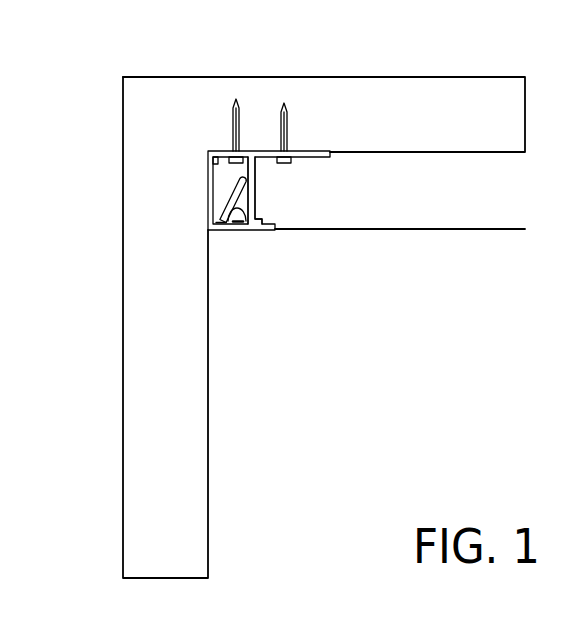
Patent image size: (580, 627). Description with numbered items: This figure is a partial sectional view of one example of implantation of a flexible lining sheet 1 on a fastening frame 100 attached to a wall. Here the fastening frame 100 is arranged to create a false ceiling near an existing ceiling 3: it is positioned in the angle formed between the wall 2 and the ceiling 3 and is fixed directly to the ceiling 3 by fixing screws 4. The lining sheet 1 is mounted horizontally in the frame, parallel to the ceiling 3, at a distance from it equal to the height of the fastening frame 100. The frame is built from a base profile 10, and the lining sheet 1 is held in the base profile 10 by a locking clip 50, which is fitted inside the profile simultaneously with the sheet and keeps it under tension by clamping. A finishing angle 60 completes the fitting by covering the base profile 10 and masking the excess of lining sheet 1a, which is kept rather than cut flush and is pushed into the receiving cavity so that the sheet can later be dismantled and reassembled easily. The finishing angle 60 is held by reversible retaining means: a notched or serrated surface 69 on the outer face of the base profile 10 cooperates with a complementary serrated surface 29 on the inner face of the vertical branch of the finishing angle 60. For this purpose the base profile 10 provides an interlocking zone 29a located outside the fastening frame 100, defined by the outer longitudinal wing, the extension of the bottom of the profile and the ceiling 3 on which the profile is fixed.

The lining sheet 1 is at (412, 230).
The excess of lining sheet 1a is at (242, 222).
The wall 2 is at (155, 459).
The ceiling 3 is at (476, 125).
The fixing screws 4 is at (238, 107).
The base profile 10 is at (218, 151).
The notched or serrated surface 29 is at (135, 206).
The interlocking zone 29a is at (212, 161).
The locking clip 50 is at (250, 203).
The finishing angle 60 is at (252, 232).
The notched or serrated surface 69 is at (217, 195).
The fastening frame 100 is at (189, 127).